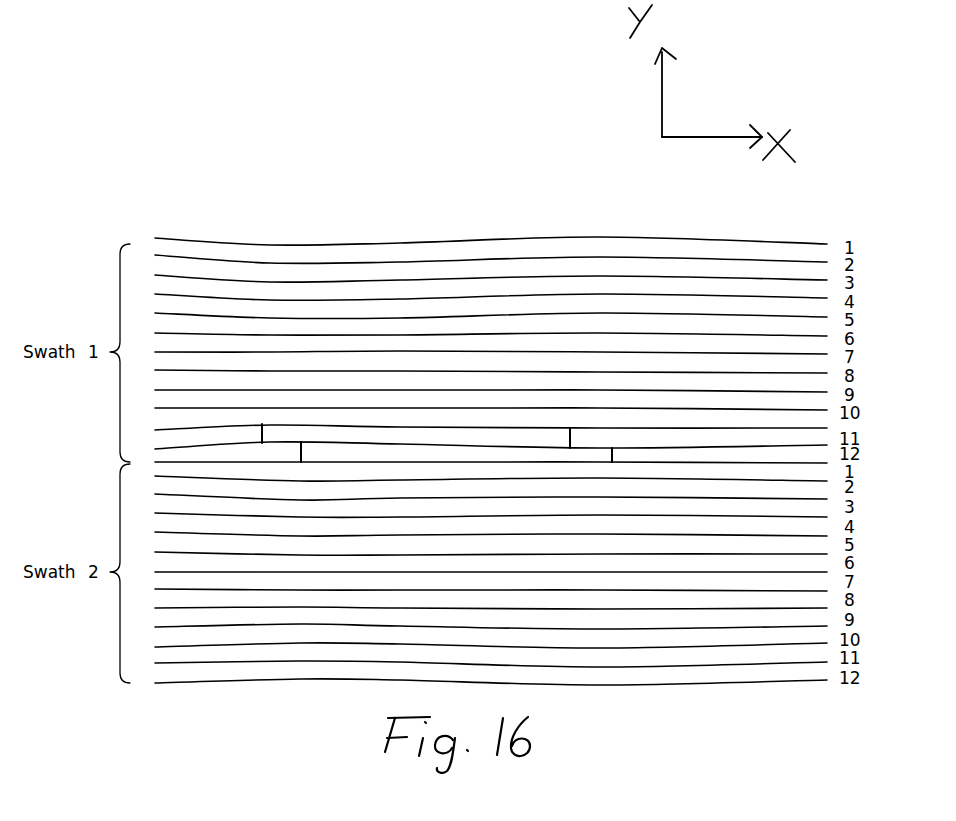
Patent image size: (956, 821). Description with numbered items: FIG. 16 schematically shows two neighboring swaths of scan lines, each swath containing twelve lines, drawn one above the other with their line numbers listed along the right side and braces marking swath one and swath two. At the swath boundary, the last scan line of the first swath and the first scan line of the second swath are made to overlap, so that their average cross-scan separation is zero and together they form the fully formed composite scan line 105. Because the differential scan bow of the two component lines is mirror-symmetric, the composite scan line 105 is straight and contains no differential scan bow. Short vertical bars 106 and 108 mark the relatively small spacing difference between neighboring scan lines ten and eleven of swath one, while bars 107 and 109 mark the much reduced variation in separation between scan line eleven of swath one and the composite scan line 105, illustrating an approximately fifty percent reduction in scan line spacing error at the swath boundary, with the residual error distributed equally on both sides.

The composite scan line 105 is at (497, 461).
The bar 106 is at (262, 424).
The bar 107 is at (301, 442).
The bar 108 is at (570, 430).
The bar 109 is at (612, 449).